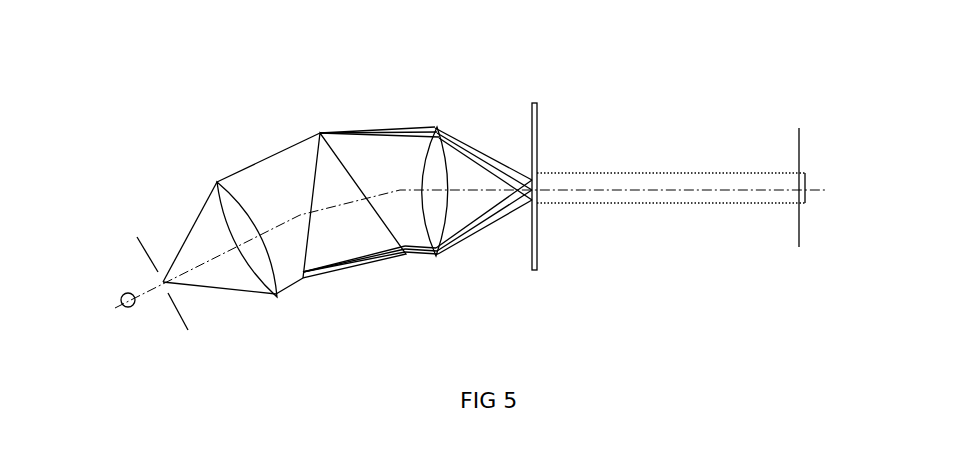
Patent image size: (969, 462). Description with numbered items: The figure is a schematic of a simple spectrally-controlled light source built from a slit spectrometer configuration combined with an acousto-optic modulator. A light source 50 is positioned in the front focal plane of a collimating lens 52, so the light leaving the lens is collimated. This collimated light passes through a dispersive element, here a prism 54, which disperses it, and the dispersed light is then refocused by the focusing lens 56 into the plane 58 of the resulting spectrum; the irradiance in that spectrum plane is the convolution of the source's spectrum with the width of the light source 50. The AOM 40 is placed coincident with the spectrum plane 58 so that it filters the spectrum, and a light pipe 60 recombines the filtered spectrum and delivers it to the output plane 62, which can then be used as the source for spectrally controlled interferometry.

The AOM 40 is at (533, 255).
The light source 50 is at (120, 297).
The collimating lens 52 is at (215, 180).
The prism 54 is at (320, 133).
The focusing lens 56 is at (437, 127).
The plane 58 is at (540, 118).
The light pipe 60 is at (618, 173).
The output plane 62 is at (803, 178).